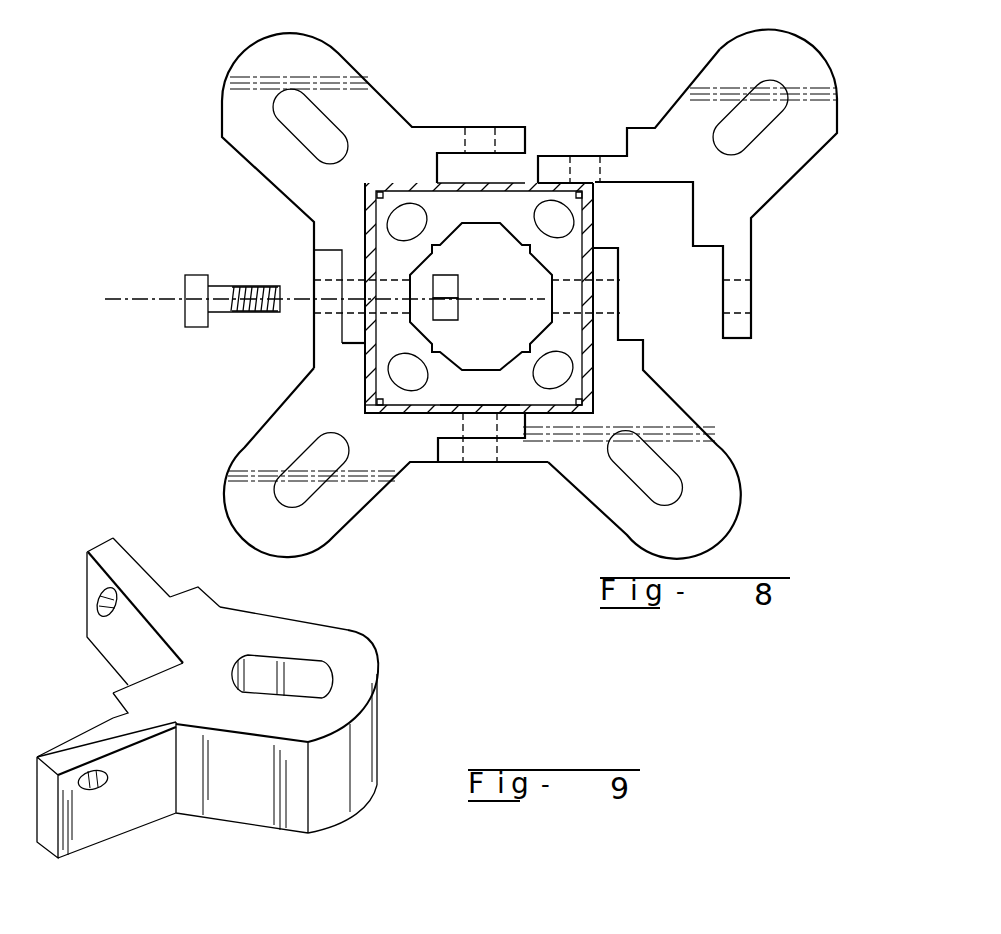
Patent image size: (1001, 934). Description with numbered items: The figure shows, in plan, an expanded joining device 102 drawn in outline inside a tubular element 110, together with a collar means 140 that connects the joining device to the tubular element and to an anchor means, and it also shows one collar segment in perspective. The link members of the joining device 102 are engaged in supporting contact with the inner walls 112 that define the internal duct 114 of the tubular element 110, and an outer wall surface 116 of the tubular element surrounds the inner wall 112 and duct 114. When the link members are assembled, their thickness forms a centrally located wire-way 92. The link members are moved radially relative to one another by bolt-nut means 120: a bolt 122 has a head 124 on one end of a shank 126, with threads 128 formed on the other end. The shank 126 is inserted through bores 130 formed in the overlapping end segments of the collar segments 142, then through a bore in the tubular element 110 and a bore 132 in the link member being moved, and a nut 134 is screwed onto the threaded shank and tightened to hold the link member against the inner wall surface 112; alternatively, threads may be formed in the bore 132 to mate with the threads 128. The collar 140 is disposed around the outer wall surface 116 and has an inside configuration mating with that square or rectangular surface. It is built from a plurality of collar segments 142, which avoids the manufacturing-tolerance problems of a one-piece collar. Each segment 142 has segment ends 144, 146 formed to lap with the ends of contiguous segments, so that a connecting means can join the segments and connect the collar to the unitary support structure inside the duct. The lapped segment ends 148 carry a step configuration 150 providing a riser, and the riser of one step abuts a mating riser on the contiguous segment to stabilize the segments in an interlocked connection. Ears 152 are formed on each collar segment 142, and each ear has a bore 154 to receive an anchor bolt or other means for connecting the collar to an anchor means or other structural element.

In FIG. 8, the wire-way 92 is at (517, 182).
In FIG. 8, the expanded joining device 102 is at (562, 340).
In FIG. 8, the tubular element 110 is at (372, 368).
In FIG. 8, the inner walls 112 is at (372, 387).
In FIG. 8, the internal duct 114 is at (452, 378).
In FIG. 8, the outer wall surface 116 is at (365, 410).
In FIG. 8, the bolt-nut means 120 is at (177, 247).
In FIG. 8, the bolt 122 is at (160, 317).
In FIG. 8, the head 124 is at (194, 327).
In FIG. 8, the shank 126 is at (217, 313).
In FIG. 8, the threads 128 is at (256, 285).
In FIG. 8, the bores 130 is at (465, 145).
In FIG. 9, the bores 130 is at (102, 613).
In FIG. 8, the bore 132 is at (400, 280).
In FIG. 8, the nut 134 is at (460, 308).
In FIG. 8, the collar means 140 is at (204, 66).
In FIG. 8, the collar segments 142 is at (420, 124).
In FIG. 9, the collar segments 142 is at (165, 815).
In FIG. 8, the segment end 144 is at (507, 125).
In FIG. 9, the segment end 144 is at (67, 858).
In FIG. 8, the segment end 146 is at (546, 157).
In FIG. 9, the segment end 146 is at (87, 567).
In FIG. 8, the lapped segment ends 148 is at (512, 425).
In FIG. 9, the step configuration 150 is at (192, 593).
In FIG. 8, the ears 152 is at (234, 150).
In FIG. 9, the ears 152 is at (380, 722).
In FIG. 8, the bore 154 is at (280, 111).
In FIG. 9, the bore 154 is at (322, 678).